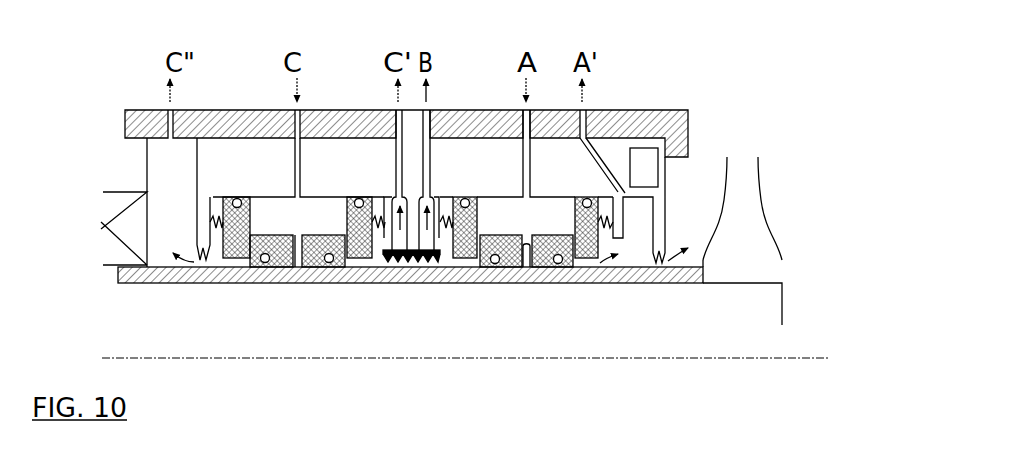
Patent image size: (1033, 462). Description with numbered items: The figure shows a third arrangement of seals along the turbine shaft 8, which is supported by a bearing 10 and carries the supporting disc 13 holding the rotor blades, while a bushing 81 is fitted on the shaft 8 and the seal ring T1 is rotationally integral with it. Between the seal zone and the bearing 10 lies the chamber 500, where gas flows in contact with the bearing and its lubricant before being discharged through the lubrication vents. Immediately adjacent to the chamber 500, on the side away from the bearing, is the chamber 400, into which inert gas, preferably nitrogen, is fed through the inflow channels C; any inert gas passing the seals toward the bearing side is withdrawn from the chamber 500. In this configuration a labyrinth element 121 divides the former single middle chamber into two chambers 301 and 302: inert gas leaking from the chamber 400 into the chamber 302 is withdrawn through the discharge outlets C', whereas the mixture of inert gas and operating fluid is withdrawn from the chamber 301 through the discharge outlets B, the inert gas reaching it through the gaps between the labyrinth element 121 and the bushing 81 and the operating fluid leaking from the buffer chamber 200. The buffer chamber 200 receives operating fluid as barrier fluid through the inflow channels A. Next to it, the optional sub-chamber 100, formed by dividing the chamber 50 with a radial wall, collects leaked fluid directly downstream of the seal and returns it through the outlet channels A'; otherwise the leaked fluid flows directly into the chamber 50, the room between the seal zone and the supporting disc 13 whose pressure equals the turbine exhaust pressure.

The bearing 10 is at (115, 202).
The bushing 81 is at (153, 273).
The chamber 500 is at (161, 241).
The chamber 400 is at (285, 216).
The chamber 302 is at (388, 243).
The chamber 301 is at (433, 243).
The buffer chamber 200 is at (522, 215).
The sub-chamber 100 is at (641, 242).
The labyrinth element 121 is at (412, 262).
The chamber 50 is at (704, 181).
The supporting disc 13 is at (757, 258).
The shaft 8 is at (772, 307).